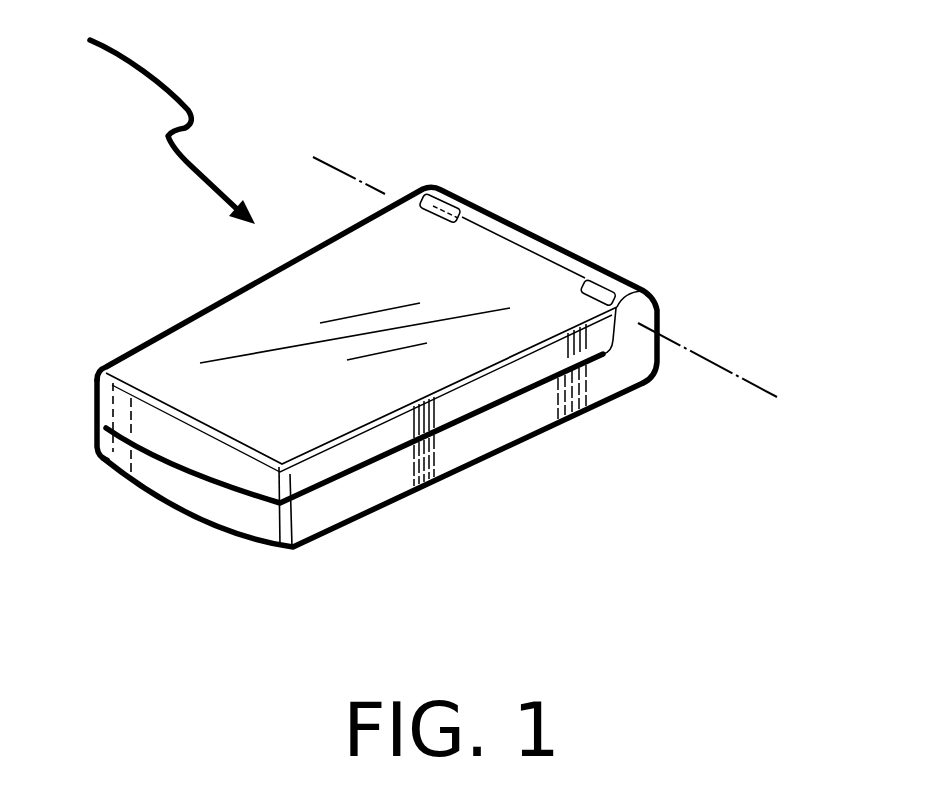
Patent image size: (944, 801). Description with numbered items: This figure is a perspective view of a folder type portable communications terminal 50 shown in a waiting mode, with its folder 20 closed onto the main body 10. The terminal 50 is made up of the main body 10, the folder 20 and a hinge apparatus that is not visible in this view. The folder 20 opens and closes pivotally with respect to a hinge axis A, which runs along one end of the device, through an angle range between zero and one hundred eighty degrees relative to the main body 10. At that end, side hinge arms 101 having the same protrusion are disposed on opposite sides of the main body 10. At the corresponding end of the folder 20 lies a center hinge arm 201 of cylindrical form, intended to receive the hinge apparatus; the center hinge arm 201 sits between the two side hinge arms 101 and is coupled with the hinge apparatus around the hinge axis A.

The main body 10 is at (490, 449).
The folder 20 is at (289, 370).
The side hinge arm 101 is at (440, 183).
The center hinge arm 201 is at (546, 238).
The portable communications terminal 50 is at (162, 112).
The hinge axis A is at (710, 357).